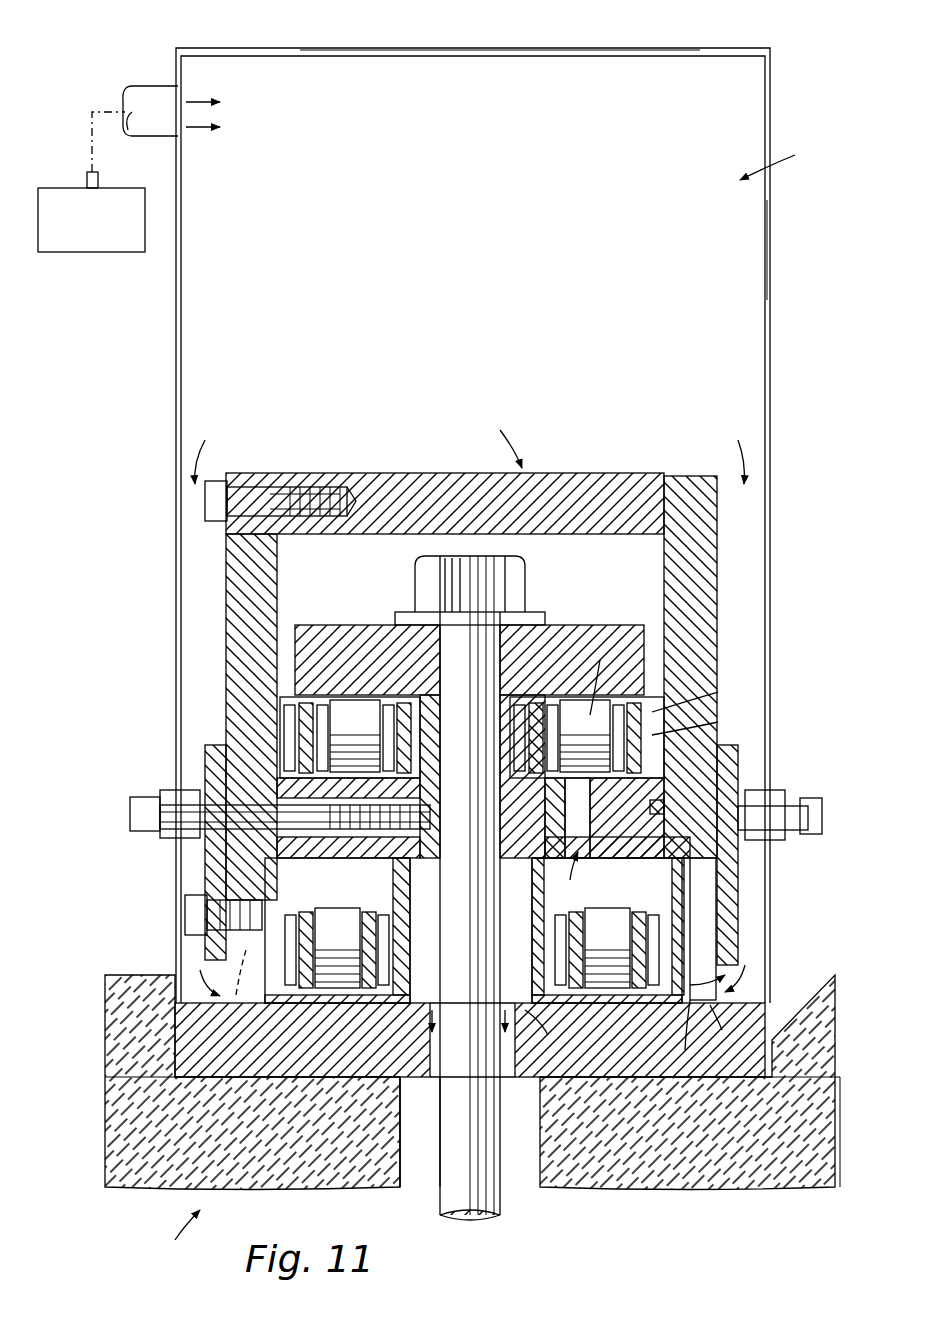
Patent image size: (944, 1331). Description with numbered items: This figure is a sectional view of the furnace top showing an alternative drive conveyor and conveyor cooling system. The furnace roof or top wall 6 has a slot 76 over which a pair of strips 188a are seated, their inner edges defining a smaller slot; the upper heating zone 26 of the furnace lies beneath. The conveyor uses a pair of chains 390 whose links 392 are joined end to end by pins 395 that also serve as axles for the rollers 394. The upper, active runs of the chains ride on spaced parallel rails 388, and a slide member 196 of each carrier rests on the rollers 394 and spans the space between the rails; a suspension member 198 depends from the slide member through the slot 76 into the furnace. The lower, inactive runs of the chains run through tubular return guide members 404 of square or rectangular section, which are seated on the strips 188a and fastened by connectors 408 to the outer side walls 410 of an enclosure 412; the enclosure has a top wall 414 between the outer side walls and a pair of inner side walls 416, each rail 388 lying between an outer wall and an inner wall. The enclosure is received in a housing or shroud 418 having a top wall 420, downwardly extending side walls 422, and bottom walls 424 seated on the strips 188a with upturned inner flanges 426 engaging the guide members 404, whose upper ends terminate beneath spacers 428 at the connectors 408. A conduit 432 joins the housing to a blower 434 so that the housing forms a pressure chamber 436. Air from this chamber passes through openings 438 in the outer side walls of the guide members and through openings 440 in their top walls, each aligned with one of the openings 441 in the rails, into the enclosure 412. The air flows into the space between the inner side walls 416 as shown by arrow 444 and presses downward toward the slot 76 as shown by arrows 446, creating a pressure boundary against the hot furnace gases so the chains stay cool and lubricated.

The top wall 6 is at (835, 1095).
The upper heating zone 26 is at (166, 1233).
The slot 76 is at (420, 1170).
The strip 188a is at (290, 1075).
The slide member 196 is at (622, 632).
The suspension member 198 is at (460, 1200).
The rail 388 is at (300, 858).
The chain 390 is at (290, 712).
The link 392 is at (392, 1040).
The roller 394 is at (328, 1020).
The pin 395 is at (707, 722).
The tubular return guide member 404 is at (700, 905).
The connector 408 is at (738, 758).
The outer side wall 410 is at (226, 565).
The enclosure 412 is at (510, 437).
The top wall 414 is at (570, 472).
The inner side wall 416 is at (388, 702).
The housing 418 is at (565, 50).
The top wall 420 is at (770, 52).
The side wall 422 is at (772, 262).
The bottom wall 424 is at (733, 1025).
The inner flange 426 is at (692, 1035).
The spacer 428 is at (210, 950).
The conduit 432 is at (150, 90).
The blower 434 is at (78, 252).
The pressure chamber 436 is at (790, 155).
The opening 438 is at (700, 950).
The opening 440 is at (572, 876).
The opening 441 is at (572, 800).
The arrow 444 is at (470, 885).
The arrow 446 is at (555, 1027).